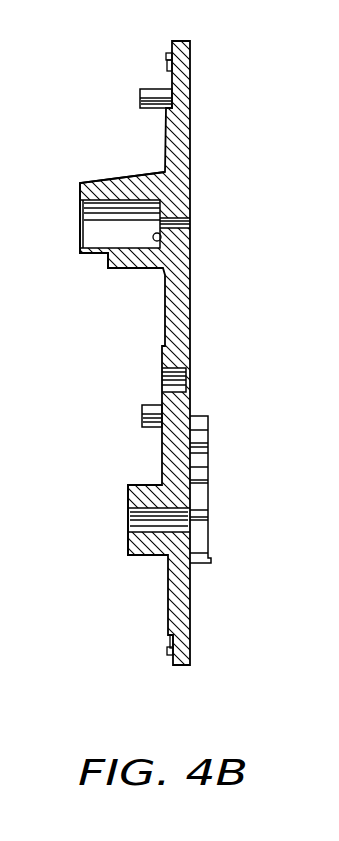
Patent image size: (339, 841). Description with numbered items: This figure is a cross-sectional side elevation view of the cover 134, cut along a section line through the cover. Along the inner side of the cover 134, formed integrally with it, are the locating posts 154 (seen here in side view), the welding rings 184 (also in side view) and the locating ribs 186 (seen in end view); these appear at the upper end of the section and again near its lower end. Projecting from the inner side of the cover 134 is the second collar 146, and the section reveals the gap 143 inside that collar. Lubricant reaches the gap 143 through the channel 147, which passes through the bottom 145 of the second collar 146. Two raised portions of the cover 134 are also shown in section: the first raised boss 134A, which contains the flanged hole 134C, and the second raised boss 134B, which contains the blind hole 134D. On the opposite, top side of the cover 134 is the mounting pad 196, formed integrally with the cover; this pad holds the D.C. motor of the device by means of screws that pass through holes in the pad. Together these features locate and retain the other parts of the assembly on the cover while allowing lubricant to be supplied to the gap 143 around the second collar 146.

The cover 134 is at (235, 657).
The first raised boss 134A is at (162, 350).
The second raised boss 134B is at (155, 556).
The flanged hole 134C is at (166, 384).
The blind hole 134D is at (138, 524).
The gap 143 is at (88, 235).
The bottom 145 is at (161, 237).
The second collar 146 is at (104, 181).
The channel 147 is at (190, 222).
The locating post 154 is at (140, 95).
The welding ring 184 is at (167, 68).
The locating rib 186 is at (166, 56).
The mounting pad 196 is at (210, 500).